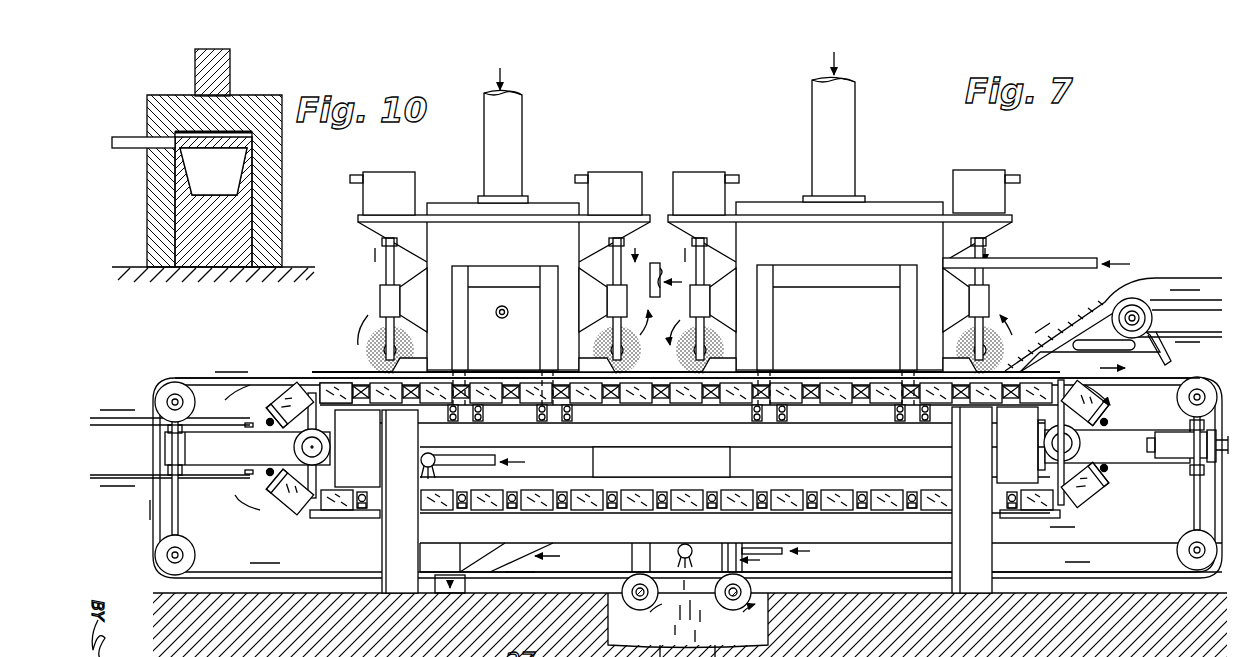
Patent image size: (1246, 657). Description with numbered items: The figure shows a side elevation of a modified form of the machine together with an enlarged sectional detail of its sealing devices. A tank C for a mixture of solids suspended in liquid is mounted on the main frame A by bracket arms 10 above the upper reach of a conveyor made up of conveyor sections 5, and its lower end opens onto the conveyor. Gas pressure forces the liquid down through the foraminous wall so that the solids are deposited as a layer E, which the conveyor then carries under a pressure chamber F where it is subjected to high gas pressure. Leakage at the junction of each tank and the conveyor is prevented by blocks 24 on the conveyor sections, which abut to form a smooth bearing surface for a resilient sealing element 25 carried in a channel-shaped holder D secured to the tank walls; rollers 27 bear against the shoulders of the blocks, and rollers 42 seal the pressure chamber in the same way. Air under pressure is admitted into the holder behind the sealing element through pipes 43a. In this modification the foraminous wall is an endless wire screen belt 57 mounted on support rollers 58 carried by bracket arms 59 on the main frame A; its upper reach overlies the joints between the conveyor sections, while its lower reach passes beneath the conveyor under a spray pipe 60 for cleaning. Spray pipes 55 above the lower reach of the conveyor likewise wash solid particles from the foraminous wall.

In FIG. 10, the tank C is at (193, 62).
In FIG. 7, the tank C is at (500, 236).
In FIG. 10, the pipes 43a is at (125, 136).
In FIG. 10, the channel-shaped holder D is at (146, 178).
In FIG. 10, the resilient sealing element 25 is at (192, 230).
In FIG. 10, the blocks 24 is at (122, 268).
In FIG. 7, the bracket arms 10 is at (503, 273).
In FIG. 7, the pressure chamber F is at (887, 200).
In FIG. 7, the rollers 27 is at (491, 306).
In FIG. 7, the conveyor sections 5 is at (362, 372).
In FIG. 7, the endless wire screen belt 57 is at (192, 384).
In FIG. 7, the support rollers 58 is at (164, 398).
In FIG. 7, the rollers 42 is at (997, 332).
In FIG. 7, the layer E is at (1068, 326).
In FIG. 7, the spray pipes 55 is at (436, 466).
In FIG. 7, the main frame A is at (396, 539).
In FIG. 7, the spray pipe 60 is at (677, 552).
In FIG. 7, the bracket arms 59 is at (1152, 460).